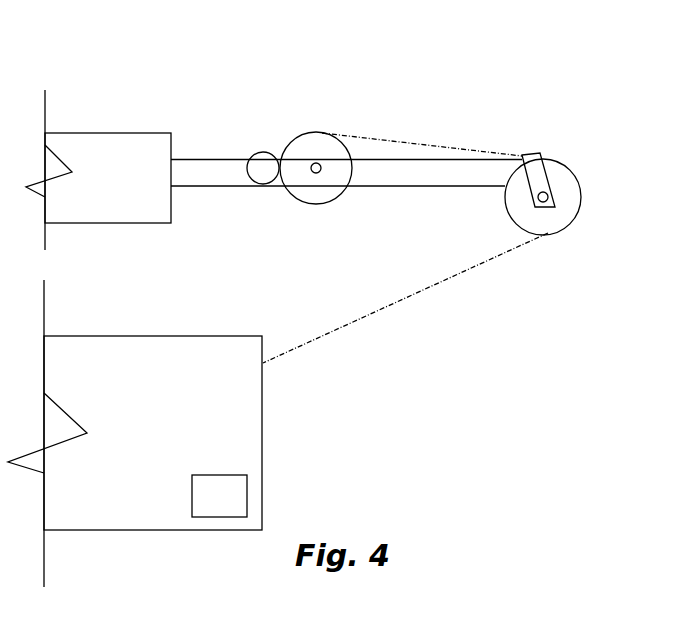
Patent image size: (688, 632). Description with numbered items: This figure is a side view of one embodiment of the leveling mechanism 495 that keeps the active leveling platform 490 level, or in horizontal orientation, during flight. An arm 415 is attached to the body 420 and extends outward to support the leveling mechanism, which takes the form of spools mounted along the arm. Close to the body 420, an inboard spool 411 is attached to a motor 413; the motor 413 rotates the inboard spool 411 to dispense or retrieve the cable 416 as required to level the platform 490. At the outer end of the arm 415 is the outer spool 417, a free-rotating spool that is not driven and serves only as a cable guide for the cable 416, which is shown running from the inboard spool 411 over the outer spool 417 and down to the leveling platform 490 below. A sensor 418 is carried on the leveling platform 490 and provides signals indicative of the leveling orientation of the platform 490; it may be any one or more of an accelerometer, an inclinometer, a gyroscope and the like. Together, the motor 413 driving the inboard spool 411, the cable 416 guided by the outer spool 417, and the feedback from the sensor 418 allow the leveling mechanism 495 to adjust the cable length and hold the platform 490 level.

The leveling mechanism 495 is at (184, 69).
The body 420 is at (157, 148).
The arm 415 is at (233, 157).
The motor 413 is at (268, 172).
The inboard spool 411 is at (318, 142).
The cable 416 is at (373, 135).
The outer spool 417 is at (557, 178).
The leveling platform 490 is at (135, 433).
The sensor 418 is at (219, 496).